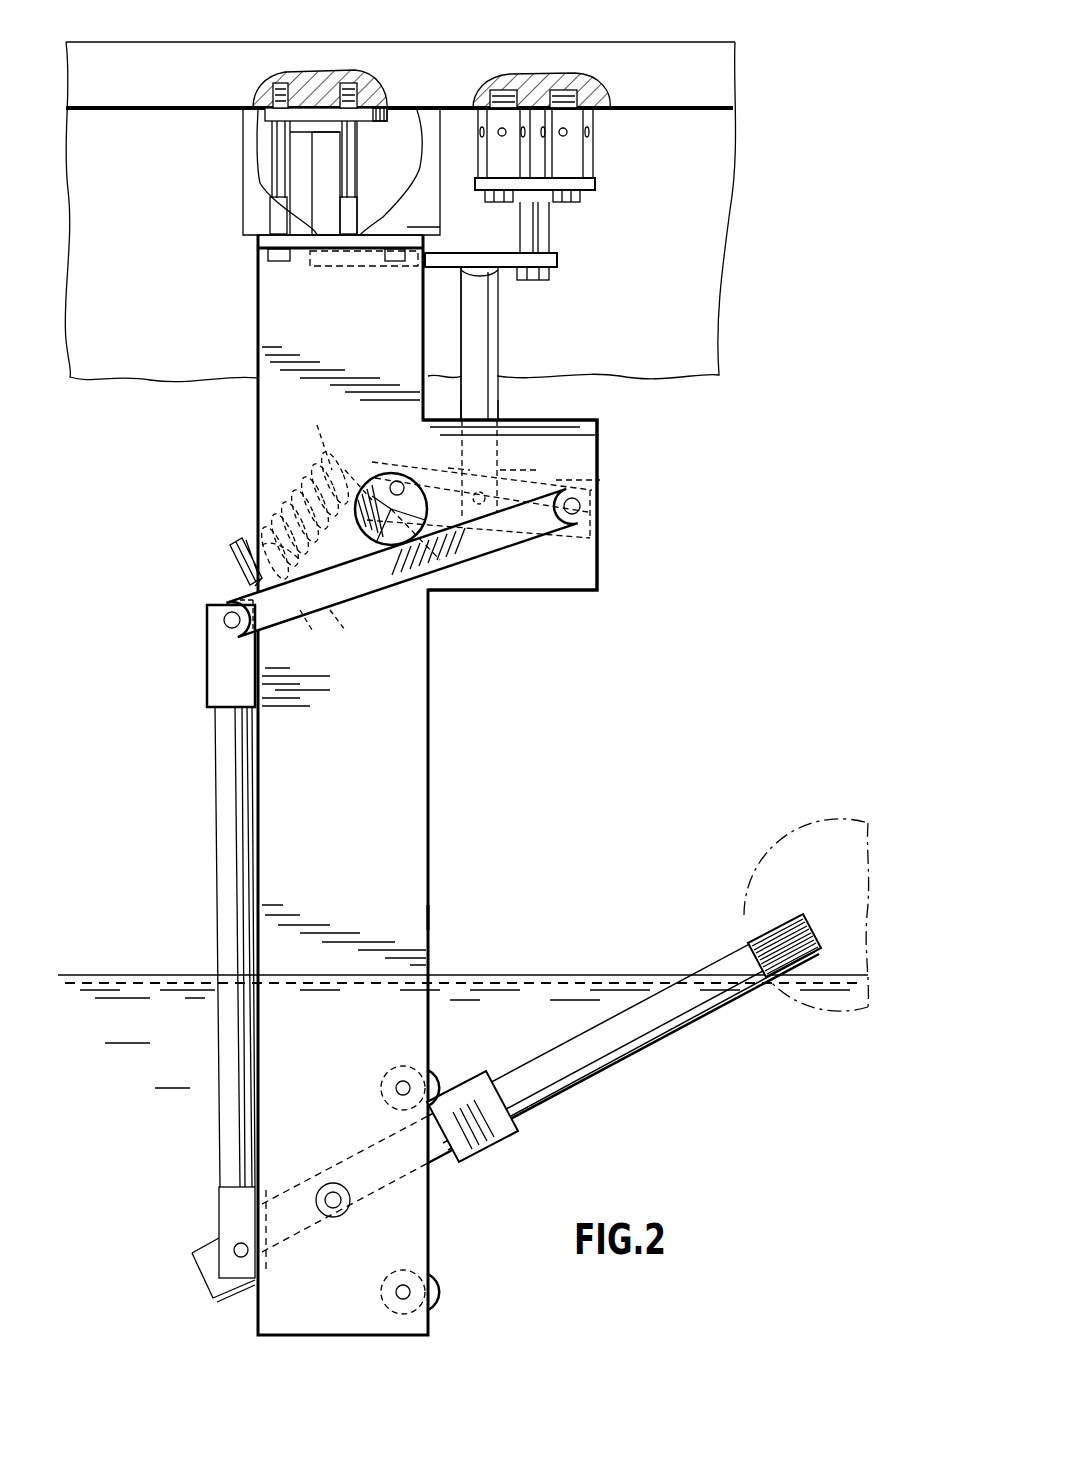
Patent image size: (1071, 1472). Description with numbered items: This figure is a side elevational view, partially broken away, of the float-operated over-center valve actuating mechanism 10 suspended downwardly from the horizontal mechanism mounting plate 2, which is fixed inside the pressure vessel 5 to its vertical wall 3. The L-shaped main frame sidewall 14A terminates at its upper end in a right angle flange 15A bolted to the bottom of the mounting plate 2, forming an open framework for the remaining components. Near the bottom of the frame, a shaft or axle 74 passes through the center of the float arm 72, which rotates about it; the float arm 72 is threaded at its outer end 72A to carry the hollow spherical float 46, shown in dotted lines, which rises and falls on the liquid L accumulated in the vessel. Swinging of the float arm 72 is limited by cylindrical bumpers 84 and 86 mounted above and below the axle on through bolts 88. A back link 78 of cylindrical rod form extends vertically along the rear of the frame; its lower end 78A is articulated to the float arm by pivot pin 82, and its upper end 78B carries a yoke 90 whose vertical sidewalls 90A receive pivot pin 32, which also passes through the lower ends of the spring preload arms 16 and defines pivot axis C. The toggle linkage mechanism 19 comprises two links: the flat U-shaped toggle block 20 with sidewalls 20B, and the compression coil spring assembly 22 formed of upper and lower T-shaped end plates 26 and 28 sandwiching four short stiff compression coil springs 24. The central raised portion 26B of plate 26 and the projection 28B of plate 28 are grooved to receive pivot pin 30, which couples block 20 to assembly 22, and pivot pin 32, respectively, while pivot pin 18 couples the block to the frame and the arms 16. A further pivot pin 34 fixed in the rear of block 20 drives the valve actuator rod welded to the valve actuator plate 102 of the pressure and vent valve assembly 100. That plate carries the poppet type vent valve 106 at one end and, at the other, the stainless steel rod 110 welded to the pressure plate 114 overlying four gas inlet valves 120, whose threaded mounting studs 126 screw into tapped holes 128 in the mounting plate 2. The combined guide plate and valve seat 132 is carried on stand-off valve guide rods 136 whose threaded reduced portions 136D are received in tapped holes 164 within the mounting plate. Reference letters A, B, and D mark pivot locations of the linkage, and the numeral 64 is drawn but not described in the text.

The mechanism mounting plate 2 is at (124, 113).
The vertical wall 3 is at (688, 352).
The pressure vessel 5 is at (594, 210).
The over-center valve actuating mechanism 10 is at (464, 806).
The main frame sidewall 14A is at (398, 917).
The right angle flange 15A is at (410, 231).
The spring preload arms 16 is at (400, 568).
The pivot pin 18 is at (585, 512).
The toggle linkage mechanism 19 is at (398, 430).
The toggle link block 20 is at (580, 549).
The sidewalls of toggle link 20B is at (502, 416).
The compression coil spring assembly 22 is at (360, 616).
The compression coil springs 24 is at (250, 542).
The upper T-shaped coil spring end plate 26 is at (314, 520).
The central raised portion 26B is at (440, 562).
The lower T-shaped coil spring end plate 28 is at (236, 546).
The central projection 28B is at (242, 592).
The pivot pin 30 is at (400, 486).
The pivot pin 32 is at (226, 626).
The pivot pin 34 is at (508, 557).
The float 46 is at (805, 862).
The stop 64 is at (576, 461).
The float arm 72 is at (690, 1010).
The threaded outer end of float arm 72A is at (758, 930).
The shaft or axle 74 is at (335, 1208).
The back link 78 is at (233, 902).
The lower end of back link 78A is at (240, 1177).
The upper end of back link 78B is at (233, 720).
The pivot pin 82 is at (238, 1247).
The upper bumper or vertical stop 84 is at (438, 1088).
The lower bumper or vertical stop 86 is at (396, 1293).
The through bolts 88 is at (408, 1084).
The yoke 90 is at (202, 706).
The vertical sidewalls of yoke 90A is at (222, 680).
The pressure and vent valve assembly 100 is at (560, 216).
The valve actuator plate 102 is at (560, 265).
The poppet type vent valve 106 is at (304, 158).
The stainless steel rod 110 is at (555, 244).
The pressure plate 114 is at (597, 188).
The gas inlet valves 120 is at (555, 150).
The externally threaded mounting studs 126 is at (570, 96).
The tapped holes 128 is at (540, 95).
The combined guide plate and valve seat 132 is at (400, 110).
The stand-off valve guide rods 136 is at (276, 181).
The threaded reduced diameter portion 136D is at (372, 80).
The tapped holes 164 is at (327, 72).
The pivot axis A is at (582, 500).
The pivot axis B is at (385, 470).
The pivot axis C is at (224, 620).
The pivot axis D is at (494, 472).
The liquid L is at (119, 1083).